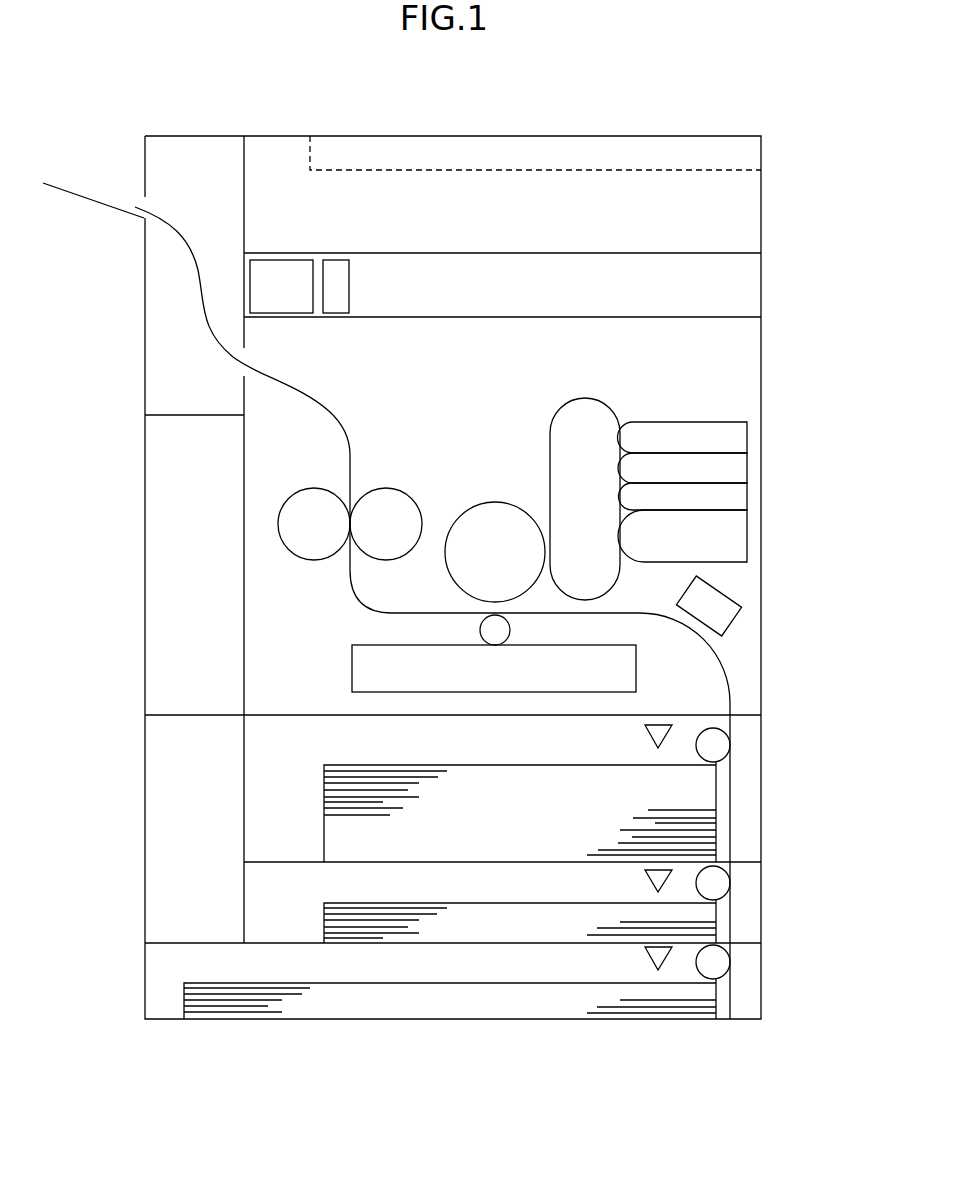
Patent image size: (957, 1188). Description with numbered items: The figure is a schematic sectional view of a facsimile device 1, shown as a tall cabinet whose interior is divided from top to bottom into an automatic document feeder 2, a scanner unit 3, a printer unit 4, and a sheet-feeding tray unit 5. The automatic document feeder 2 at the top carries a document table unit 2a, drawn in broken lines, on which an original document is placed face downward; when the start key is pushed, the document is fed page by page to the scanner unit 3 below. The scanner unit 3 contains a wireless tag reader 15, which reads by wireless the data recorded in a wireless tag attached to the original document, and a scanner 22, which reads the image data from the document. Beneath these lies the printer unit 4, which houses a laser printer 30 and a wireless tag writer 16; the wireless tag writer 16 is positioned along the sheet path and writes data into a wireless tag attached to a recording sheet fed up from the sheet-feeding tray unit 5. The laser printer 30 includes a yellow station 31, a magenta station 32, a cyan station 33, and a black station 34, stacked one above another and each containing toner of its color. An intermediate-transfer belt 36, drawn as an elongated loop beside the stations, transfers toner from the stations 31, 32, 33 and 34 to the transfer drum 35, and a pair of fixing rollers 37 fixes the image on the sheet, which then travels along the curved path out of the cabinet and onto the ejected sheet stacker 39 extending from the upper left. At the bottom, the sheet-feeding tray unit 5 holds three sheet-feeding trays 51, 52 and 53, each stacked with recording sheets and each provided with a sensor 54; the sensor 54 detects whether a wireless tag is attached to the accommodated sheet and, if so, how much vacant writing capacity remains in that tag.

The facsimile device 1 is at (684, 88).
The automatic document feeder 2 is at (753, 193).
The document table unit 2a is at (412, 169).
The scanner unit 3 is at (753, 282).
The printer unit 4 is at (753, 343).
The sheet-feeding tray unit 5 is at (810, 838).
The wireless tag reader 15 is at (283, 270).
The wireless tag writer 16 is at (730, 604).
The scanner 22 is at (343, 285).
The laser printer 30 is at (466, 431).
The yellow (Y) station 31 is at (740, 436).
The magenta (M) station 32 is at (740, 468).
The cyan (C) station 33 is at (740, 496).
The black (K) station 34 is at (740, 534).
The transfer drum 35 is at (495, 505).
The intermediate-transfer belt 36 is at (588, 408).
The fixing rollers 37 is at (327, 498).
The ejected sheet stacker 39 is at (77, 193).
The sheet-feeding tray 51 is at (755, 756).
The sheet-feeding tray 52 is at (755, 893).
The sheet-feeding tray 53 is at (755, 976).
The sensor 54 is at (645, 735).